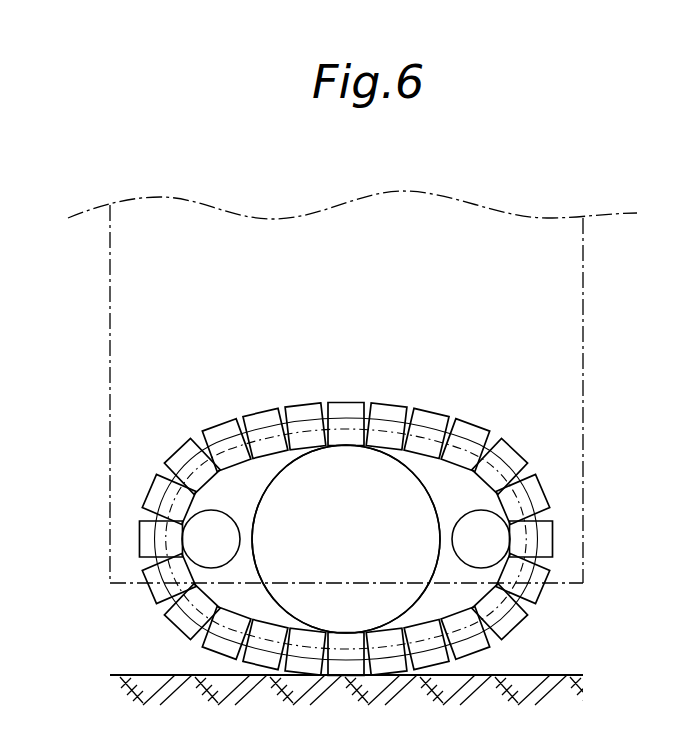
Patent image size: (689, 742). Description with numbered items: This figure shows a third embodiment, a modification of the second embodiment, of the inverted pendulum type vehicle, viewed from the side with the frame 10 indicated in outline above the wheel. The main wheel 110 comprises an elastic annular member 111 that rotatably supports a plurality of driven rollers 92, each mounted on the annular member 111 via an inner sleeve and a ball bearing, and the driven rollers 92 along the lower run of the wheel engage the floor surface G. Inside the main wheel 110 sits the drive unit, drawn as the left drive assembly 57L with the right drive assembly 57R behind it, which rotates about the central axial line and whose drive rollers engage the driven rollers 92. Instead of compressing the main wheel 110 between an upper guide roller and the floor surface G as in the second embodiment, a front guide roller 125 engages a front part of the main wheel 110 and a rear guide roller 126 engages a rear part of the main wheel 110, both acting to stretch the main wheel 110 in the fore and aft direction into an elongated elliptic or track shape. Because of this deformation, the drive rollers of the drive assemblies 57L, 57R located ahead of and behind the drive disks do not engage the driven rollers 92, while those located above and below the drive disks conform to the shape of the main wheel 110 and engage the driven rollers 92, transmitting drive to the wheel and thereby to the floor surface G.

The frame 10 is at (583, 287).
The left drive assembly 57L is at (319, 494).
The right drive assembly 57R is at (346, 539).
The driven roller 92 is at (465, 420).
The main wheel 110 is at (202, 424).
The annular member 111 is at (526, 458).
The front guide roller 125 is at (195, 537).
The rear guide roller 126 is at (492, 538).
The floor surface G is at (568, 673).